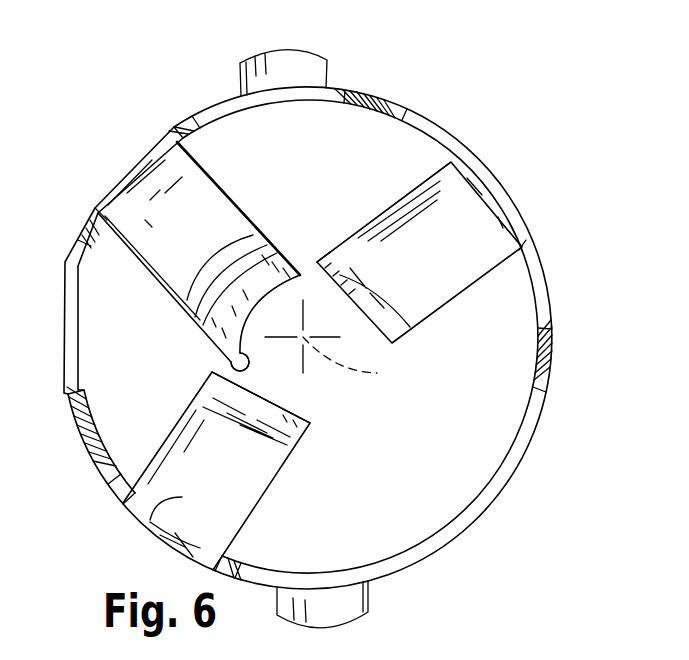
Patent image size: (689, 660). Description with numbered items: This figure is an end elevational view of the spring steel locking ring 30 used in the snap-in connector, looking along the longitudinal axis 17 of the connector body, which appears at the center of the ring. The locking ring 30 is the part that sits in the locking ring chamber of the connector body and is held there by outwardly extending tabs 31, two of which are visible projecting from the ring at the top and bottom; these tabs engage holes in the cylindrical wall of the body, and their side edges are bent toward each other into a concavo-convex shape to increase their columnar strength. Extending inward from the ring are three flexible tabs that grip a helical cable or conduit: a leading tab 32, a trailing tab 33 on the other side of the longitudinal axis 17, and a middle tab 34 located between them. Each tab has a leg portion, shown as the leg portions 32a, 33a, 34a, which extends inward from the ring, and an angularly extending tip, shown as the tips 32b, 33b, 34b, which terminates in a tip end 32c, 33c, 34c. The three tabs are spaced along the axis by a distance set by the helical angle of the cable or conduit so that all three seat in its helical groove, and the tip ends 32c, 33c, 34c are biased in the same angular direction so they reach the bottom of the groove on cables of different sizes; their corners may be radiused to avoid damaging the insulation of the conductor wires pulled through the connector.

The longitudinal axis 17 is at (338, 343).
The locking ring 30 is at (492, 491).
The outwardly extending tabs 31 is at (292, 67).
The leading tab 32 is at (433, 260).
The leg portion 32a is at (410, 193).
The angularly extending tip 32b is at (413, 323).
The tip end 32c is at (328, 273).
The trailing tab 33 is at (231, 471).
The leg portion 33a is at (257, 507).
The angularly extending tip 33b is at (297, 448).
The tip end 33c is at (270, 400).
The middle tab 34 is at (181, 248).
The leg portion 34a is at (125, 247).
The angularly extending tip 34b is at (188, 318).
The tip end 34c is at (227, 362).